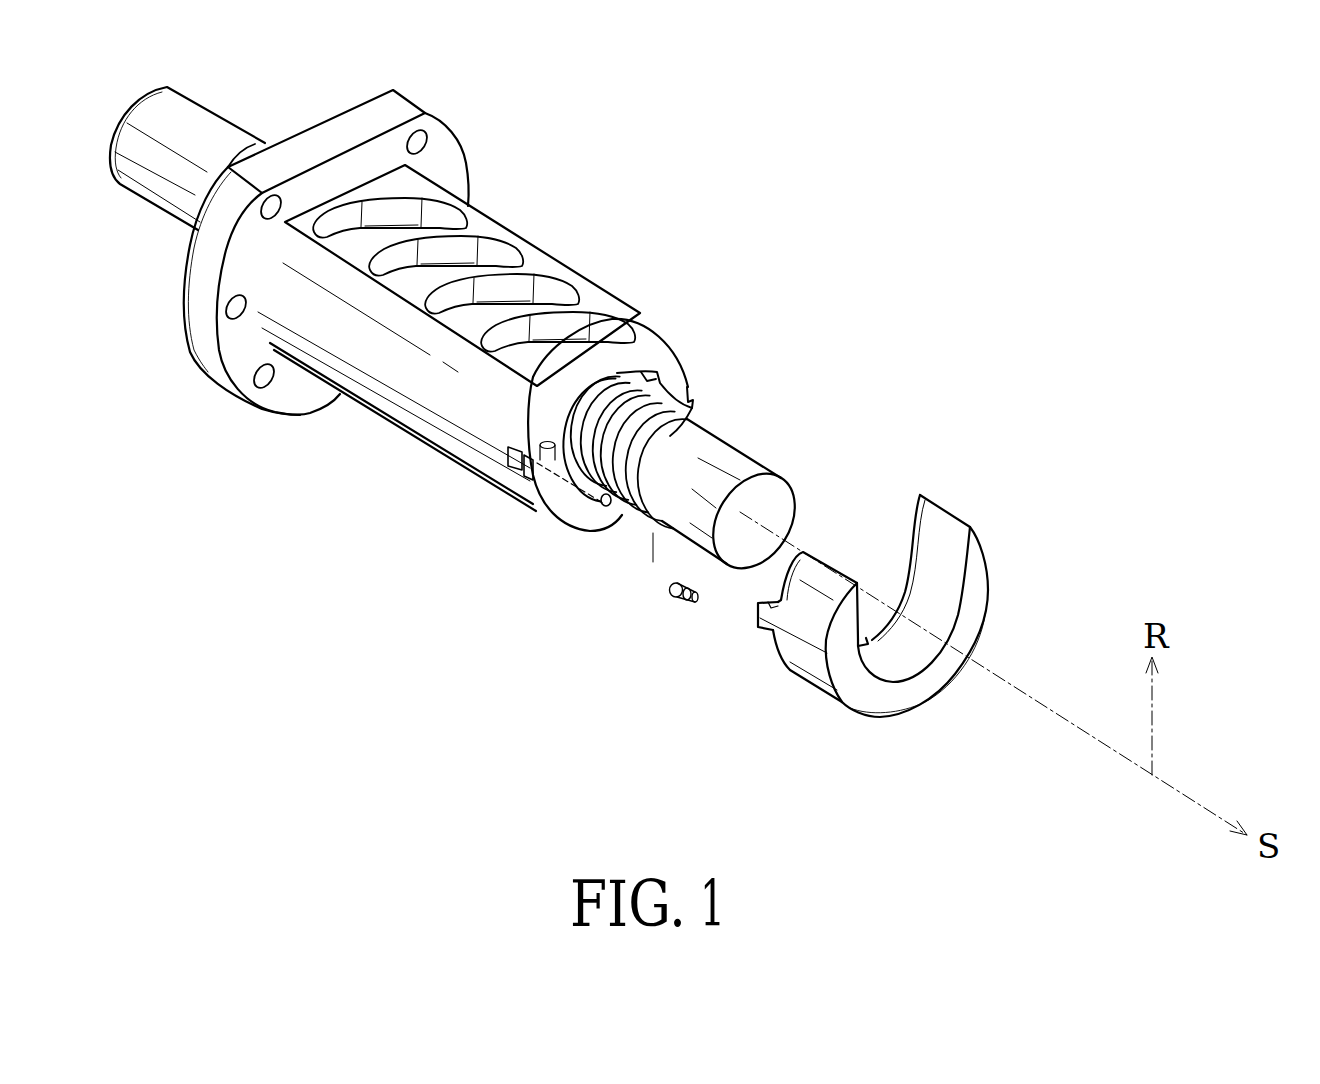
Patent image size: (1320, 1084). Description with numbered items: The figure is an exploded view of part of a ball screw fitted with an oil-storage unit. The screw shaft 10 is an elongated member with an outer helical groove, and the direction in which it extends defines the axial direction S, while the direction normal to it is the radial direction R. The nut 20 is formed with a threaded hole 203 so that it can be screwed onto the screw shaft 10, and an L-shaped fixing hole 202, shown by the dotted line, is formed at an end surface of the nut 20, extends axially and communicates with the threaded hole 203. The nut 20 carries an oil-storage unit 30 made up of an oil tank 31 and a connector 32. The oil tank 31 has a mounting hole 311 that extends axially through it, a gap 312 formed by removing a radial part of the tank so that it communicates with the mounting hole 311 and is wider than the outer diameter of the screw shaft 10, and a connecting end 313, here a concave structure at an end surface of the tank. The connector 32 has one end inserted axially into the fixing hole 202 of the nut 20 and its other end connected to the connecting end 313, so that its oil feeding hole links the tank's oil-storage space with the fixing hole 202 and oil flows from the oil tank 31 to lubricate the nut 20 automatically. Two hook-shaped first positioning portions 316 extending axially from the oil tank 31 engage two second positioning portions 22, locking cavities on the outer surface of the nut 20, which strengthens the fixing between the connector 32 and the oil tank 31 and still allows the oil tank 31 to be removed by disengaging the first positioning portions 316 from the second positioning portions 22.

The screw shaft 10 is at (720, 452).
The nut 20 is at (402, 400).
The second positioning portions 22 is at (693, 390).
The fixing hole 202 is at (610, 512).
The threaded hole 203 is at (650, 377).
The oil-storage unit 30 is at (645, 677).
The oil tank 31 is at (852, 608).
The connector 32 is at (655, 603).
The mounting hole 311 is at (912, 657).
The gap 312 is at (894, 545).
The connecting end 313 is at (868, 643).
The first positioning portions 316 is at (757, 616).